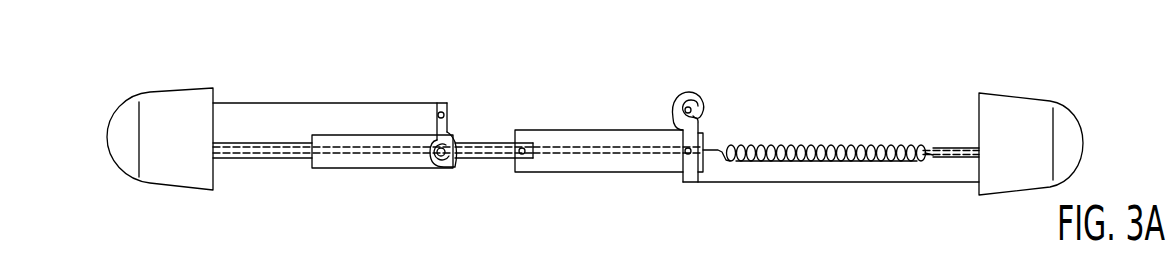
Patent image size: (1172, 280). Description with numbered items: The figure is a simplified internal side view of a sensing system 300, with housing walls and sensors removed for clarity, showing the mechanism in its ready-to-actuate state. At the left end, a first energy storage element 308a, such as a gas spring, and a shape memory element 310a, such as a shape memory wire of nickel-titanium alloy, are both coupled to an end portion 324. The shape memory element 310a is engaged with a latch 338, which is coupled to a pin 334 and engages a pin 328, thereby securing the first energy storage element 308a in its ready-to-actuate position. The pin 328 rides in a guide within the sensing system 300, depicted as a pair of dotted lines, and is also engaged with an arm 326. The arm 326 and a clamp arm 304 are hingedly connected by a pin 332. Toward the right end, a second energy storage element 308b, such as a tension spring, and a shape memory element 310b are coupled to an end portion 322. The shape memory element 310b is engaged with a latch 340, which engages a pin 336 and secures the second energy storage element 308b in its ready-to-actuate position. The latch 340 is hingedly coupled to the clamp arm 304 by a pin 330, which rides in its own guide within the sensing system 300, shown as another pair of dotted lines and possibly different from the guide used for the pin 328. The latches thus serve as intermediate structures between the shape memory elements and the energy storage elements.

The sensing system 300 is at (97, 92).
The clamp arm 304 is at (570, 130).
The first energy storage element 308a is at (309, 166).
The second energy storage element 308b is at (832, 147).
The shape memory element 310a is at (388, 103).
The shape memory element 310b is at (841, 183).
The end portion 322 is at (1080, 118).
The end portion 324 is at (121, 175).
The arm 326 is at (484, 161).
The pin 328 is at (437, 152).
The pin 330 is at (684, 156).
The pin 332 is at (523, 155).
The pin 334 is at (446, 115).
The pin 336 is at (693, 110).
The latch 338 is at (450, 105).
The latch 340 is at (677, 105).